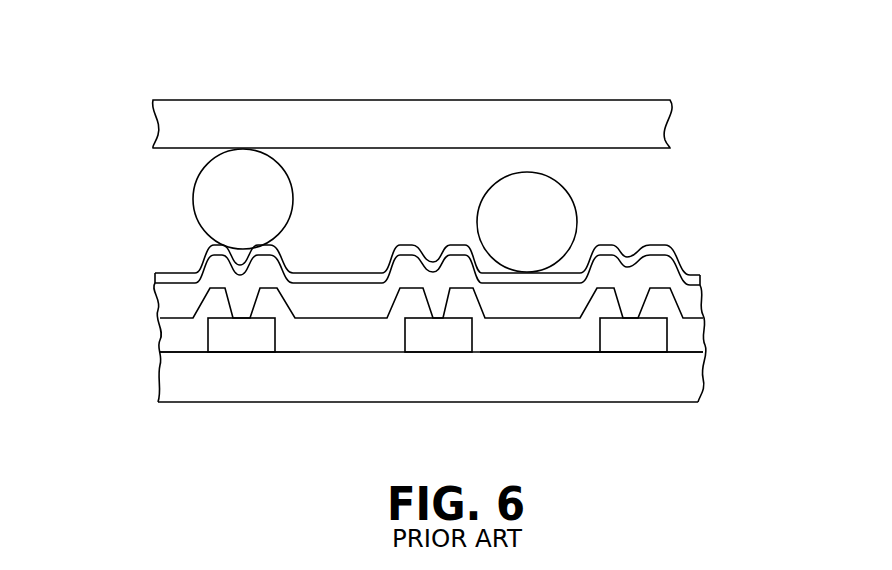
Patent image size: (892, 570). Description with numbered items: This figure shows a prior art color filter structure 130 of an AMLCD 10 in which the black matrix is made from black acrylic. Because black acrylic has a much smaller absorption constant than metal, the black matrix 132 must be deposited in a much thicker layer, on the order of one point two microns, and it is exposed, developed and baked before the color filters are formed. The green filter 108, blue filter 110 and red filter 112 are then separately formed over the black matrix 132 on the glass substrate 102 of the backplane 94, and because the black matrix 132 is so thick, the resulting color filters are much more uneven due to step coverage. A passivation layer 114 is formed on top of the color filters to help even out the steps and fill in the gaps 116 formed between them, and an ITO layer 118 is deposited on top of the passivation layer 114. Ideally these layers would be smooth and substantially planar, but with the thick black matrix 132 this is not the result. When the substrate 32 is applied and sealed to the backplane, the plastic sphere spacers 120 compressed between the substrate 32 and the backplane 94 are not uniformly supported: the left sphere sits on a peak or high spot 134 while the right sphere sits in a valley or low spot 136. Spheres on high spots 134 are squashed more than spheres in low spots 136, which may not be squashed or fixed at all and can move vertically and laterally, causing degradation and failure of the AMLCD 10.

The AMLCD 10 is at (728, 96).
The substrate 32 is at (430, 124).
The backplane 94 is at (236, 392).
The glass substrate 102 is at (575, 395).
The green filter 108 is at (358, 340).
The blue filter 110 is at (573, 343).
The red filter 112 is at (160, 352).
The passivation layer 114 is at (353, 307).
The gaps 116 is at (242, 288).
The ITO layer 118 is at (177, 280).
The plastic sphere spacers 120 is at (266, 210).
The color filter structure 130 is at (128, 295).
The black matrix 132 is at (247, 340).
The high spot 134 is at (188, 232).
The low spot 136 is at (525, 280).